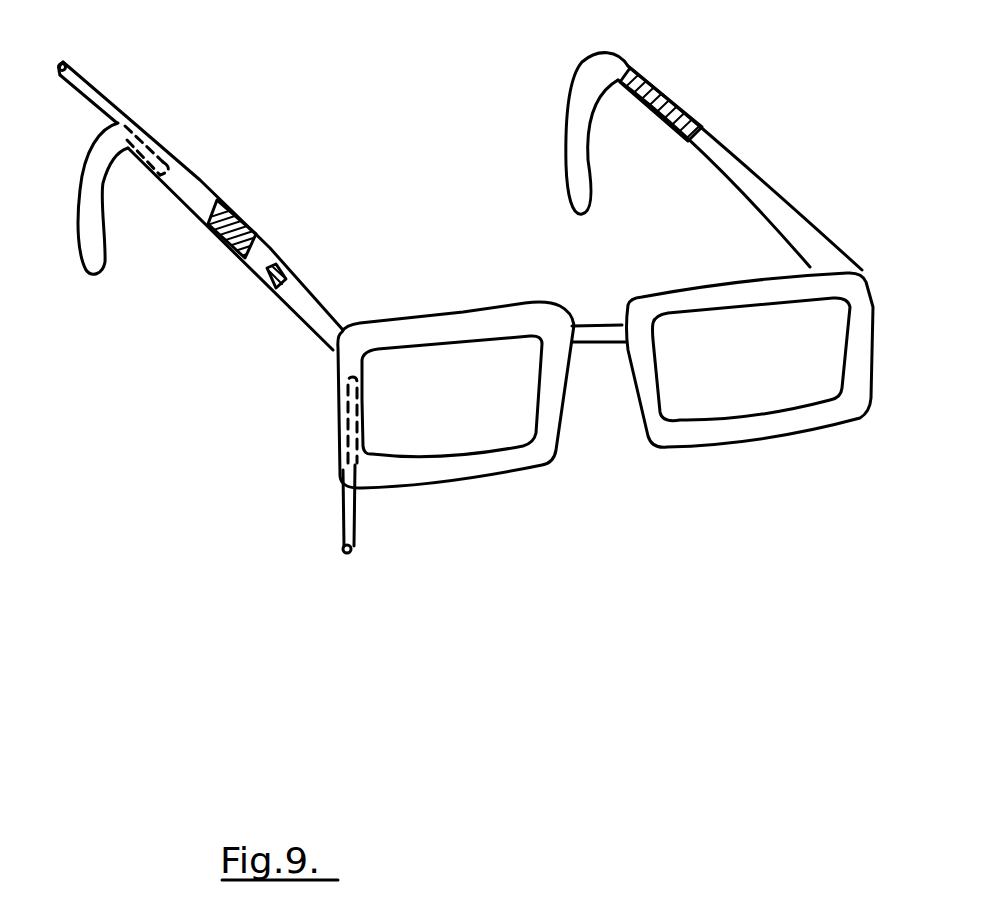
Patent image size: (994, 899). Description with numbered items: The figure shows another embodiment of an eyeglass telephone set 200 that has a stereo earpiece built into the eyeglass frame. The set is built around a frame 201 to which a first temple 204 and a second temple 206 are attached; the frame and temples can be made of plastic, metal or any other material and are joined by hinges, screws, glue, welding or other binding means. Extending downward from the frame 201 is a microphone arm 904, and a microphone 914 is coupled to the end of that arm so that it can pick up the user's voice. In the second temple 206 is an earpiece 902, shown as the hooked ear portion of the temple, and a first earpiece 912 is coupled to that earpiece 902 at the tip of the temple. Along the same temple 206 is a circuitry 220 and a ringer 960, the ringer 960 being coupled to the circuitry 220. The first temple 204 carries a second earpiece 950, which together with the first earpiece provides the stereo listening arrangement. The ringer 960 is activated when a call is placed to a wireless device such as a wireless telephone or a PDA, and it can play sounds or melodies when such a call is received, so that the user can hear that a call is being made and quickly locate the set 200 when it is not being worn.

The eyeglass telephone set 200 is at (815, 58).
The frame 201 is at (690, 447).
The first temple 204 is at (762, 178).
The second temple 206 is at (203, 186).
The circuitry 220 is at (255, 226).
The earpiece 902 is at (92, 102).
The microphone arm 904 is at (358, 416).
The first earpiece 912 is at (64, 58).
The microphone 914 is at (352, 548).
The second earpiece 950 is at (682, 96).
The ringer 960 is at (272, 283).